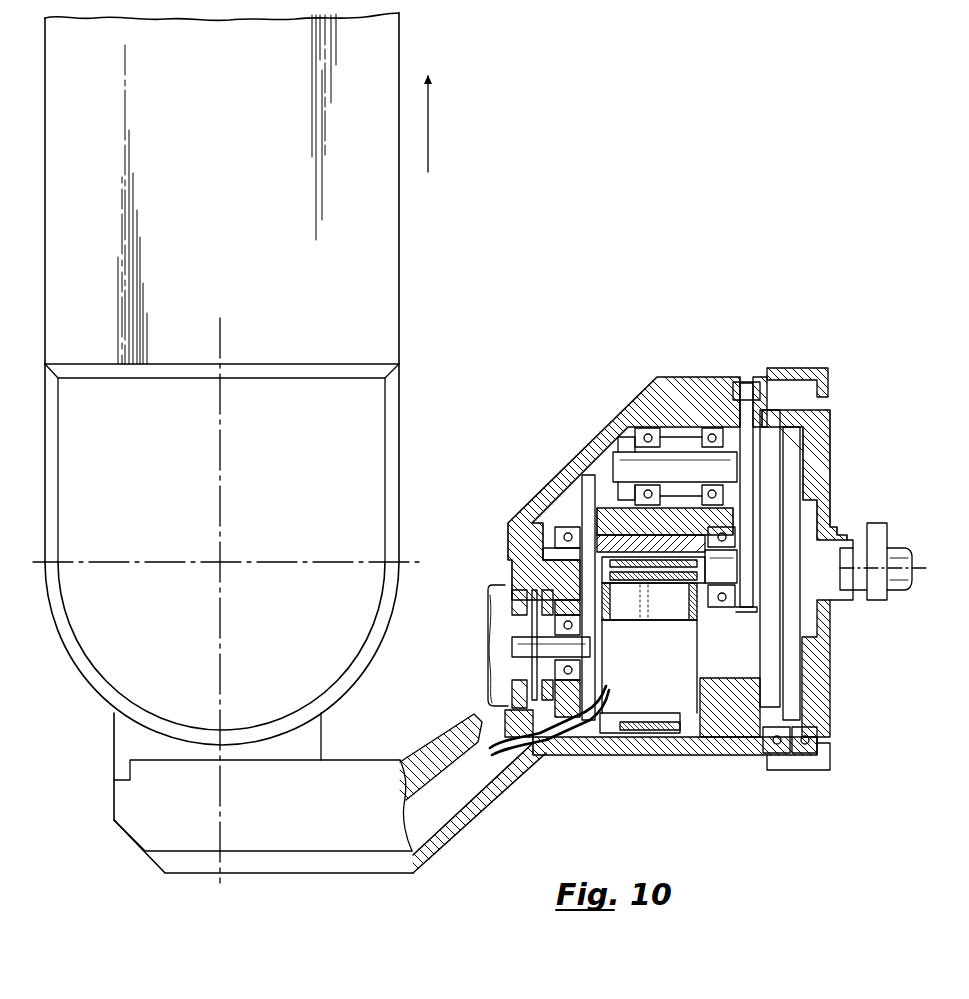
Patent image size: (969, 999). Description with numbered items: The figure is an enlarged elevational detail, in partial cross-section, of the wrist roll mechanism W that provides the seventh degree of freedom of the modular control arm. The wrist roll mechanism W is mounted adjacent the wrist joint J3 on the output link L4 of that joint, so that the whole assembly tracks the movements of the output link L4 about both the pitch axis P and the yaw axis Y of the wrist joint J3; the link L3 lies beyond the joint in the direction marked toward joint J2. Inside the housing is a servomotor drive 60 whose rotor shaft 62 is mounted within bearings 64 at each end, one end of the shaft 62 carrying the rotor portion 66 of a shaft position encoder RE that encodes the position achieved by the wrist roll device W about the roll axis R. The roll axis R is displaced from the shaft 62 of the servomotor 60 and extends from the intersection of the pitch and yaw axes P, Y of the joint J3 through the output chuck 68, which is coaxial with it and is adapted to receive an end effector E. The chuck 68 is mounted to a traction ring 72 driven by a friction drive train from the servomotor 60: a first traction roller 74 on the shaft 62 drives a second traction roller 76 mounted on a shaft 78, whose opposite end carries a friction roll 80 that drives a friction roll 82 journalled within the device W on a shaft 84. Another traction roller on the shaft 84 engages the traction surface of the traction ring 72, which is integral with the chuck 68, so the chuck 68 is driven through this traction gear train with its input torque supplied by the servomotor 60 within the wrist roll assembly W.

The servomotor drive 60 is at (648, 688).
The rotor shaft 62 is at (727, 645).
The bearings 64 is at (547, 675).
The rotor portion 66 is at (533, 633).
The output chuck 68 is at (846, 533).
The traction ring 72 is at (815, 455).
The first traction roller 74 is at (594, 668).
The traction roller 76 is at (588, 474).
The shaft 78 is at (566, 530).
The friction roll 80 is at (810, 570).
The friction roll 82 is at (745, 395).
The shaft 84 is at (648, 465).
The wrist roll mechanism W is at (706, 368).
The end effector E is at (893, 548).
The shaft position encoder RE is at (489, 642).
The pitch axis P is at (222, 562).
The roll axis R is at (405, 562).
The yaw axis Y is at (220, 818).
The wrist joint J3 is at (96, 700).
The joint 2 J2 is at (462, 124).
The link 3 L3 is at (197, 137).
The output link L4 is at (285, 862).